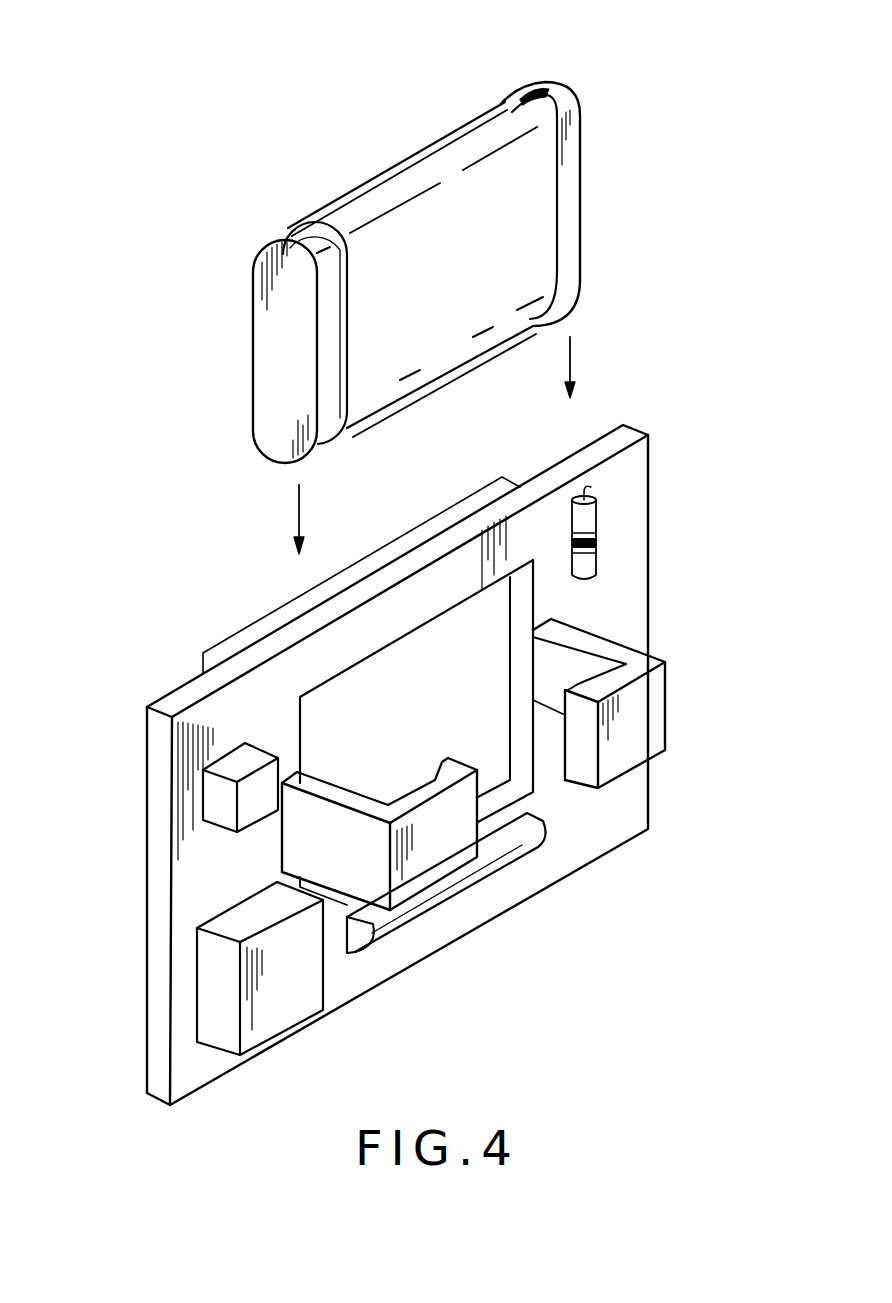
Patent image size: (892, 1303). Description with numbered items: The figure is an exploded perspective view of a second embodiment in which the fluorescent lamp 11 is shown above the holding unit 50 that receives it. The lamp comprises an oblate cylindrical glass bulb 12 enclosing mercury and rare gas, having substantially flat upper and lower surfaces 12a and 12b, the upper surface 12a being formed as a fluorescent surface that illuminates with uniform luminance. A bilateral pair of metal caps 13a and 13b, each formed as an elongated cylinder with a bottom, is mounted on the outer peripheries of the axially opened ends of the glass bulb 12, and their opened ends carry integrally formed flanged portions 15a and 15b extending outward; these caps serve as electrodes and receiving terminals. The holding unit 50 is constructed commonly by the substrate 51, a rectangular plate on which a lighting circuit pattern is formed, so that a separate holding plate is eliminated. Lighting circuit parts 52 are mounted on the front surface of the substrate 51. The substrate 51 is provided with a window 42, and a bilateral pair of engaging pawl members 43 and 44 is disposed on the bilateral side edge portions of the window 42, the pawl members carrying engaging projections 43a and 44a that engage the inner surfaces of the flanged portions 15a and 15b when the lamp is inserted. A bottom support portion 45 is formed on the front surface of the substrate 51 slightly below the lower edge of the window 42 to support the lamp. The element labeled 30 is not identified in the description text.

The fluorescent lamp 11 is at (425, 138).
The glass bulb 12 is at (353, 207).
The upper surface 12a is at (380, 180).
The lower surface 12b is at (500, 175).
The metal cap 13a is at (293, 337).
The metal cap 13b is at (578, 157).
The flanged portion 15a is at (283, 236).
The flanged portion 15b is at (548, 102).
The component holder 30 is at (372, 555).
The window 42 is at (432, 650).
The engaging pawl member 43 is at (440, 855).
The engaging projection 43a is at (448, 766).
The engaging pawl member 44 is at (640, 740).
The engaging projection 44a is at (580, 692).
The bottom support portion 45 is at (525, 855).
The holding unit 50 is at (112, 690).
The substrate 51 is at (637, 520).
The lighting circuit parts 52 is at (240, 765).